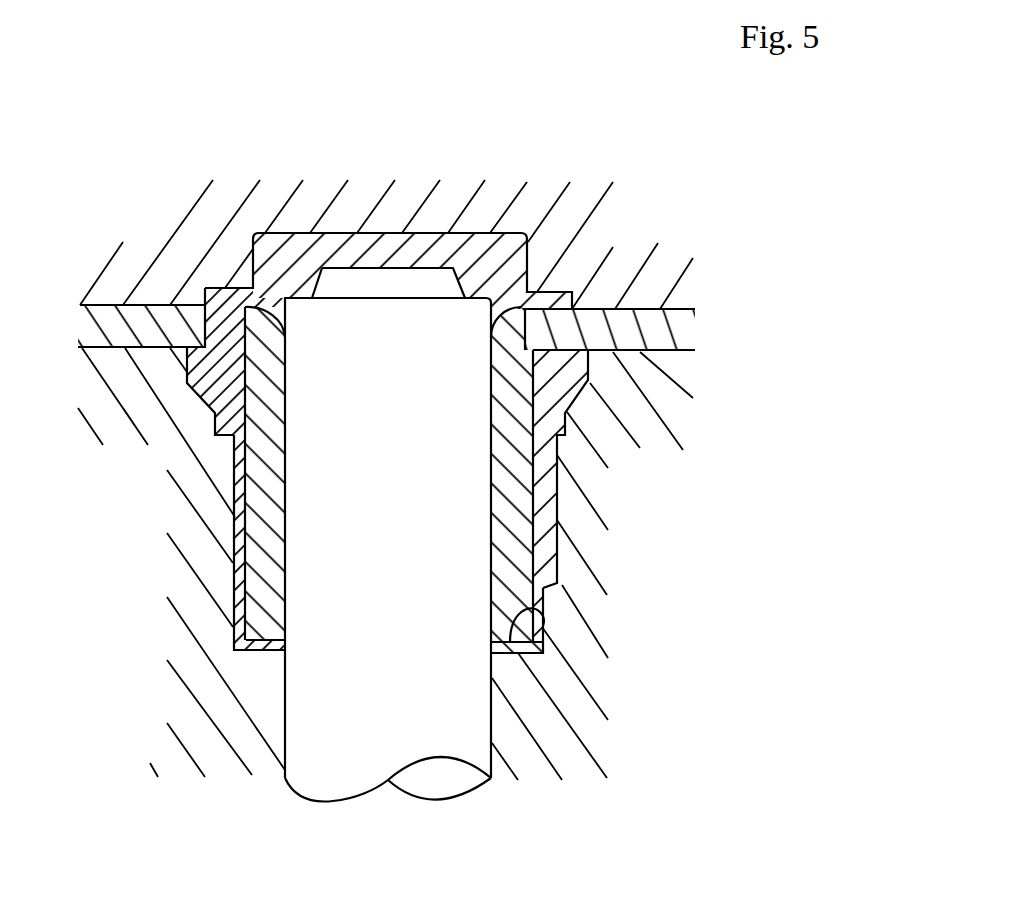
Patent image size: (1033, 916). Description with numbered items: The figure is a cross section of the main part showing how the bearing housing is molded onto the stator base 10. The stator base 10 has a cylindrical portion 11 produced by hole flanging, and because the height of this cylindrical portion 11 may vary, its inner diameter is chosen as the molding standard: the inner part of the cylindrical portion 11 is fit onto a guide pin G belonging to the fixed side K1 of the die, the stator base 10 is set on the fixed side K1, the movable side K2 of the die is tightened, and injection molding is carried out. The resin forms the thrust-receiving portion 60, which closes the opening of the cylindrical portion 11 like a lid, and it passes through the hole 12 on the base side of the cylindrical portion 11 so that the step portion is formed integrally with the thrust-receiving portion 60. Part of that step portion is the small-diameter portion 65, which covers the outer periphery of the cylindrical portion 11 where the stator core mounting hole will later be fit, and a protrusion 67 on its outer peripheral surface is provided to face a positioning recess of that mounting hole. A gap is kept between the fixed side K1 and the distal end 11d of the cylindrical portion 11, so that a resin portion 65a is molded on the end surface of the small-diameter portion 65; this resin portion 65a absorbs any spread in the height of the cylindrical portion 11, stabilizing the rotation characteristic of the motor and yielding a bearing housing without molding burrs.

The stator base 10 is at (113, 330).
The cylindrical portion 11 is at (513, 420).
The distal end of the cylindrical portion 11d is at (537, 603).
The hole 12 is at (228, 322).
The thrust-receiving portion 60 is at (308, 256).
The small-diameter portion 65 is at (245, 530).
The resin portion 65a is at (267, 652).
The protrusion 67 is at (558, 488).
The fixed side of the die K1 is at (557, 737).
The movable side of the die K2 is at (538, 205).
The guide pin G is at (453, 712).